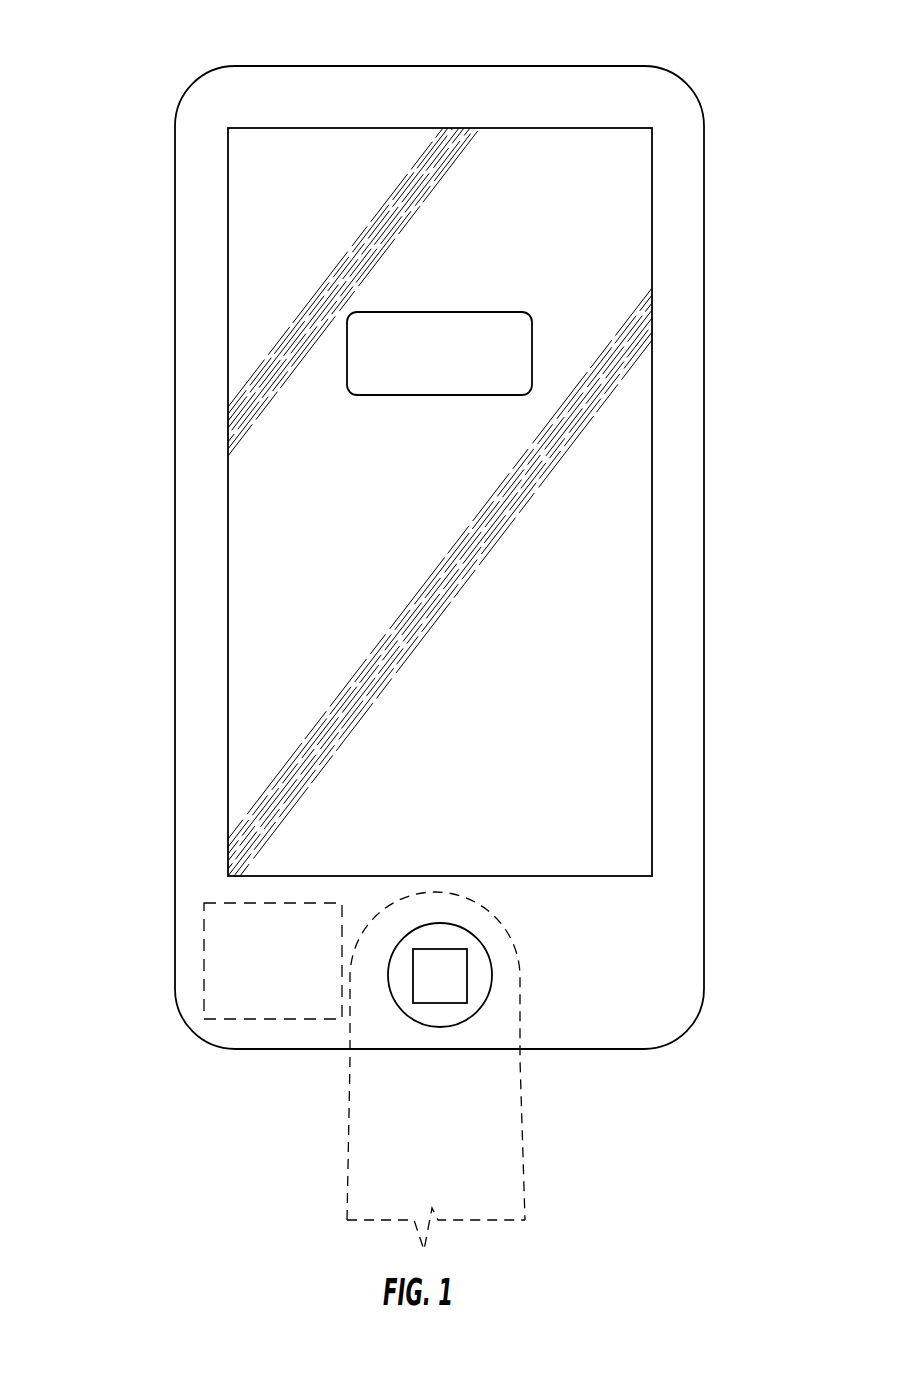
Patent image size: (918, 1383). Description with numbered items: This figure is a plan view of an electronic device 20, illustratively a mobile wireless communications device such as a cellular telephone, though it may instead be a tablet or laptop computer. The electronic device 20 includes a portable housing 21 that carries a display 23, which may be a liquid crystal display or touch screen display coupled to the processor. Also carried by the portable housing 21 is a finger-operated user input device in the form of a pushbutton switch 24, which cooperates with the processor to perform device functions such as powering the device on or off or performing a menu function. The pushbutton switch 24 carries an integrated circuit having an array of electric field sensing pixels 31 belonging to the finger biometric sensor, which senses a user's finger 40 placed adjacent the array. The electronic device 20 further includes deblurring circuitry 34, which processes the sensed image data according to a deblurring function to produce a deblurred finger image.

The electronic device 20 is at (175, 66).
The portable housing 21 is at (175, 257).
The display 23 is at (228, 405).
The pushbutton switch 24 is at (492, 978).
The array of electric field sensing pixels 31 is at (437, 1003).
The deblurring circuitry 34 is at (204, 955).
The finger 40 is at (345, 1065).